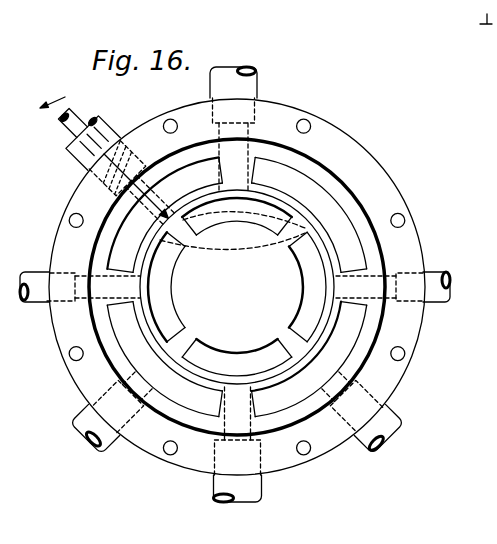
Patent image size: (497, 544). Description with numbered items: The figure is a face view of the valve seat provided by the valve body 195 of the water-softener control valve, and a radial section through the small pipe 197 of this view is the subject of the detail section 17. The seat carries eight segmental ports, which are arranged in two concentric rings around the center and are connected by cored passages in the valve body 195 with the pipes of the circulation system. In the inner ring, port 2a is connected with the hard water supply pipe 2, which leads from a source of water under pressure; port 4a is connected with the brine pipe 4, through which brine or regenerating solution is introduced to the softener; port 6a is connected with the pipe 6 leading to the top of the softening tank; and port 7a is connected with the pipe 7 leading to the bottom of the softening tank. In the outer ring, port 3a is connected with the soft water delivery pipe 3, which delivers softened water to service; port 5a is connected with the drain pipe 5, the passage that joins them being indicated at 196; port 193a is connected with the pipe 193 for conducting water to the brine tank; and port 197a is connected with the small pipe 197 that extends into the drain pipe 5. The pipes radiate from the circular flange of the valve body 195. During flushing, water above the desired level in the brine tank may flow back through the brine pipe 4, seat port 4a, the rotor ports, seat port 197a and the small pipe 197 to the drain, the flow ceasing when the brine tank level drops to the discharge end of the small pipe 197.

The valve body 195 is at (402, 203).
The passage 196 is at (257, 250).
The small pipe 197 is at (74, 113).
The port 197a is at (184, 174).
The drain pipe 5 is at (98, 125).
The port 5a is at (322, 197).
The pipe 7 is at (256, 82).
The port 7a is at (233, 212).
The pipe 6 is at (438, 271).
The port 6a is at (312, 287).
The brine pipe 4 is at (33, 274).
The port 4a is at (160, 287).
The hard water supply pipe 2 is at (258, 498).
The port 2a is at (230, 356).
The soft water delivery pipe 3 is at (393, 414).
The port 3a is at (338, 357).
The pipe 193 is at (95, 438).
The port 193a is at (178, 397).
The fluid flow arrow 17 is at (107, 162).